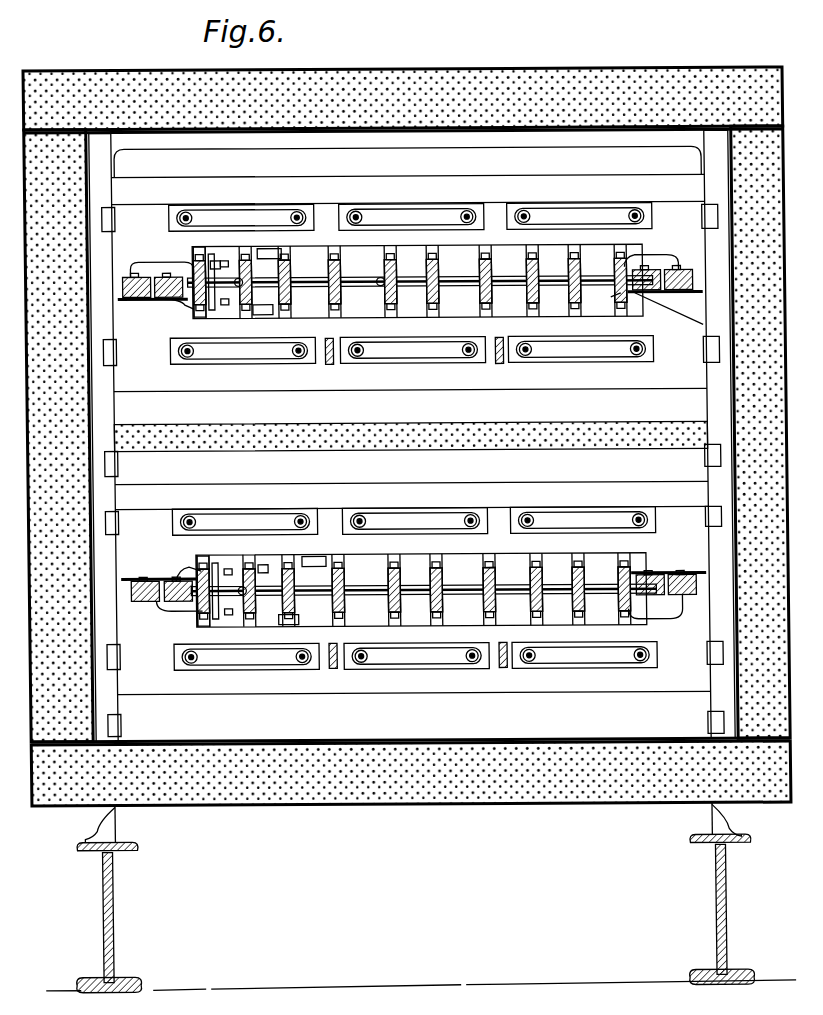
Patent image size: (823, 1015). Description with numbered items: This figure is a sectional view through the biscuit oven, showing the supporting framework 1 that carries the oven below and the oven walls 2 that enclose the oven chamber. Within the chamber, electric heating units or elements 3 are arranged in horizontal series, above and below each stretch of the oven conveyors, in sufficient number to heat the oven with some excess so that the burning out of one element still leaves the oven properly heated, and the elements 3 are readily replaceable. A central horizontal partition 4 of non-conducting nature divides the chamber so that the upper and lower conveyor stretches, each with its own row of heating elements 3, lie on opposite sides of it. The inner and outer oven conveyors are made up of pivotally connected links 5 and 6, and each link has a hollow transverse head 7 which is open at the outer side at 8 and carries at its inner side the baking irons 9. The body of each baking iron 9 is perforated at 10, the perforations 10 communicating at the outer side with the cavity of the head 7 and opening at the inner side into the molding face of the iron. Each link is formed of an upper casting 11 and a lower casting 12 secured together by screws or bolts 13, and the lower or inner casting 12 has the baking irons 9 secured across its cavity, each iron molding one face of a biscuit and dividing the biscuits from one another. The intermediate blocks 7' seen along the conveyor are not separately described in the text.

The supporting framework 1 is at (104, 903).
The oven walls 2 is at (407, 436).
The electric heating units or elements 3 is at (240, 207).
The central horizontal partition 4 is at (410, 436).
The link of inner oven conveyor 5 is at (258, 317).
The link of outer oven conveyor 6 is at (270, 251).
The hollow transverse head 7 is at (311, 449).
The intermediate block 7' is at (422, 435).
The opening at outer side of head 8 is at (212, 290).
The baking irons 9 is at (229, 278).
The perforations 10 is at (360, 290).
The upper casting 11 is at (195, 257).
The lower casting 12 is at (170, 264).
The screws or bolts 13 is at (212, 262).